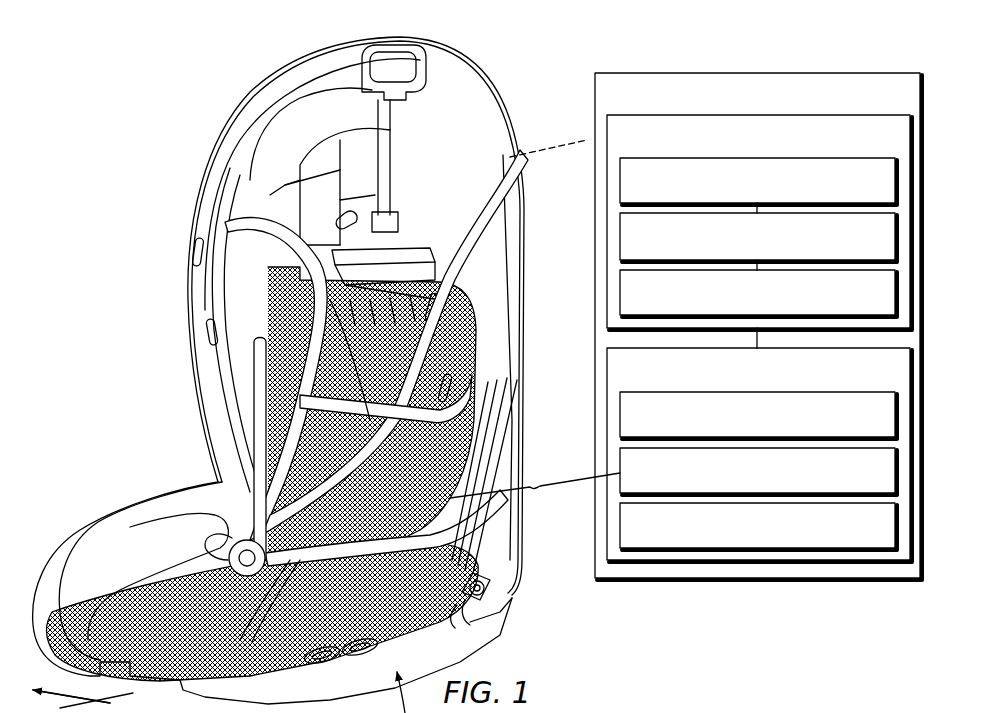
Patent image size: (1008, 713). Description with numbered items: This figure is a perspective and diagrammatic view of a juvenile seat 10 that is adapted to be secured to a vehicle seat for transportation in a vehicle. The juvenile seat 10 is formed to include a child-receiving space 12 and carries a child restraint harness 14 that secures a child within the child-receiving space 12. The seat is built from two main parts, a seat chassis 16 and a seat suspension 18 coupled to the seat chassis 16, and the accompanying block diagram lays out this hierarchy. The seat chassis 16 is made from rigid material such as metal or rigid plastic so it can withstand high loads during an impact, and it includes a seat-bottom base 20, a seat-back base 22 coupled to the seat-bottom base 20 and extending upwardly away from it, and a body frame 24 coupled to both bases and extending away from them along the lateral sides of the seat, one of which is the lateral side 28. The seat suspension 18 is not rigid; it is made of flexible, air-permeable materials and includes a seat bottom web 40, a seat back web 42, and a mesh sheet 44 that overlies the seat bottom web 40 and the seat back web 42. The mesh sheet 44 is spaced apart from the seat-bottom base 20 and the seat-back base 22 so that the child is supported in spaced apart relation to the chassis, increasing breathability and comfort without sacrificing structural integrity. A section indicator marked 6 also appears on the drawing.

The juvenile seat 10 is at (700, 73).
The seat chassis 16 is at (645, 113).
The seat-back base 22 is at (620, 180).
The body frame 24 is at (503, 410).
The seat-bottom base 20 is at (473, 618).
The seat suspension 18 is at (607, 402).
The seat back web 42 is at (453, 443).
The mesh sheet 44 is at (620, 478).
The seat bottom web 40 is at (420, 633).
The child-receiving space 12 is at (227, 390).
The child restraint harness 14 is at (258, 427).
The lateral side 28 is at (100, 462).
The section line 6 is at (510, 132).